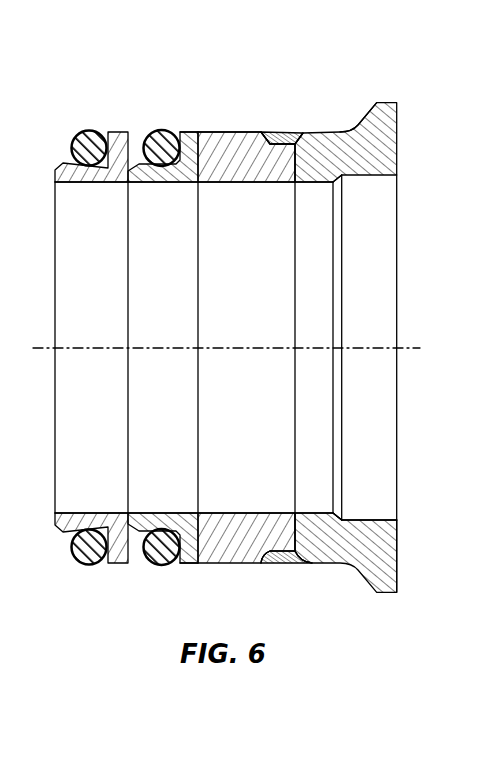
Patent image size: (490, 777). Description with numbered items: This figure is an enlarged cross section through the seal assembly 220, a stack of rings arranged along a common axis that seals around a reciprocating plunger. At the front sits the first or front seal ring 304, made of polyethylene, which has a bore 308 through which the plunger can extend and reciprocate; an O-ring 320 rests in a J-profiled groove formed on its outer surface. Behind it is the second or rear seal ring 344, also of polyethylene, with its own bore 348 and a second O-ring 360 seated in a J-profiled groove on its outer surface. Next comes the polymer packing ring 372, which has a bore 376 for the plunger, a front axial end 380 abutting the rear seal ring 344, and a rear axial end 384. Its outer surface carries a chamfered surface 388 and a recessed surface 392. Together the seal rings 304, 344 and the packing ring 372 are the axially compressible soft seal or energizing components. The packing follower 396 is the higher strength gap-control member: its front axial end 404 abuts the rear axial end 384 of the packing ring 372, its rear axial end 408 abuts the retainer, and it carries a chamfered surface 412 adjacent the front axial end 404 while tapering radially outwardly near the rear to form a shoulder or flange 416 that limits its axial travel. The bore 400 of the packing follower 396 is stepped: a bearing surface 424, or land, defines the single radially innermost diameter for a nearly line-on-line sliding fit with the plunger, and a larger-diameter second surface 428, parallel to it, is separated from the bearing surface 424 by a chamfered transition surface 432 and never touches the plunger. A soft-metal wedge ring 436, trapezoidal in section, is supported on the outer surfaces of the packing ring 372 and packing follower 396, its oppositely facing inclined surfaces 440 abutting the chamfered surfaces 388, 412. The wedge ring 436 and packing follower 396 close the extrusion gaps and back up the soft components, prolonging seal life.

The seal assembly 220 is at (403, 84).
The front seal ring 304 is at (64, 166).
The bore 308 is at (87, 183).
The O-ring 320 is at (88, 130).
The rear seal ring 344 is at (188, 130).
The bore 348 is at (171, 183).
The O-ring 360 is at (161, 130).
The packing ring 372 is at (228, 131).
The bore 376 is at (255, 183).
The front axial end 380 is at (196, 527).
The rear axial end 384 is at (305, 517).
The chamfered surface 388 is at (268, 131).
The recessed surface 392 is at (281, 131).
The packing follower 396 is at (384, 145).
The bore 400 is at (358, 492).
The front axial end 404 is at (292, 537).
The rear axial end 408 is at (397, 547).
The chamfered surface 412 is at (295, 135).
The flange 416 is at (365, 113).
The bearing surface 424 is at (317, 513).
The second surface 428 is at (380, 521).
The chamfered transition surface 432 is at (343, 516).
The wedge ring 436 is at (278, 563).
The inclined surfaces 440 is at (257, 554).